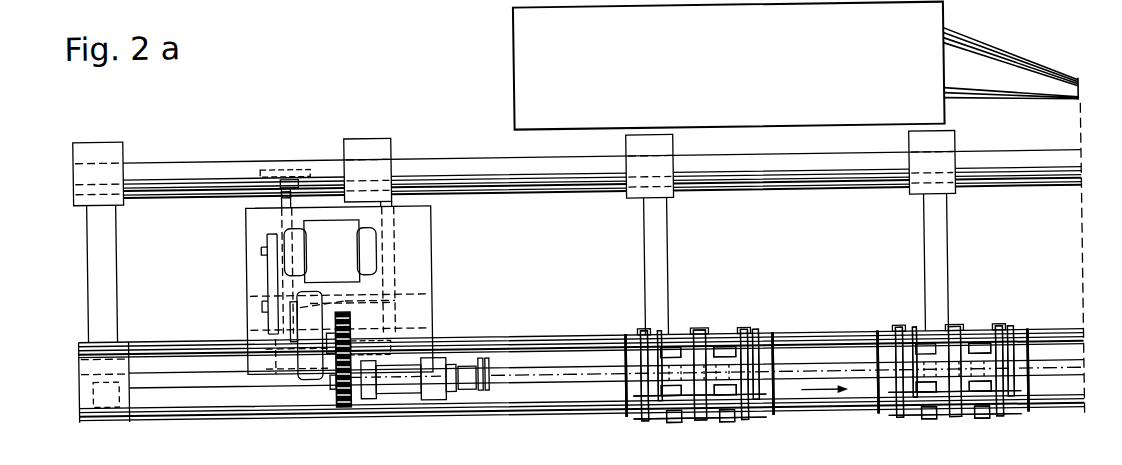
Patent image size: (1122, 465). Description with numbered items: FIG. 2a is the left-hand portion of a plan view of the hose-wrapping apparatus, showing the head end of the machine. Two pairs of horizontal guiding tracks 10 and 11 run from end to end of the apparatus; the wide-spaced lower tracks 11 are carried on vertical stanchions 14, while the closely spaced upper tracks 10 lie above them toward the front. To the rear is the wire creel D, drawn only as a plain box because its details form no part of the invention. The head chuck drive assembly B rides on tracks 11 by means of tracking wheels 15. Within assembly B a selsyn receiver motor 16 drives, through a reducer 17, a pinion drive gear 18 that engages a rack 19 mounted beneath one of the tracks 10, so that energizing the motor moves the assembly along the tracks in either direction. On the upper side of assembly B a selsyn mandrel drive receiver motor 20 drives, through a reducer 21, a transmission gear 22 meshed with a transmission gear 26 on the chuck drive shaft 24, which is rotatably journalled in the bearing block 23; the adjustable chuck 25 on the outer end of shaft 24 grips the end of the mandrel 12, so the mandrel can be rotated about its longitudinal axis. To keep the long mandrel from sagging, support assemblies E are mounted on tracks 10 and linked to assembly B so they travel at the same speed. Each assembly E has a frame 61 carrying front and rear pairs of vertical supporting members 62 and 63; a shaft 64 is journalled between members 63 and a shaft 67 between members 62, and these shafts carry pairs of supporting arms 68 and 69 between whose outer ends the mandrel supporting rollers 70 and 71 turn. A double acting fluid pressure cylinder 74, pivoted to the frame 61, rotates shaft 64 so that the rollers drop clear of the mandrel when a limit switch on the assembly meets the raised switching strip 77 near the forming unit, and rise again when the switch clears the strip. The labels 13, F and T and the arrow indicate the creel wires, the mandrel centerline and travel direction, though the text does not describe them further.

The upper guiding tracks 10 is at (522, 340).
The lower guiding tracks 11 is at (195, 191).
The mandrel 12 is at (490, 334).
The strand guide wedge 13 is at (1005, 102).
The vertical stanchions 14 is at (92, 392).
The tracking wheels 15 is at (283, 176).
The selsyn receiver motor 16 is at (388, 300).
The reducer 17 is at (250, 326).
The pinion drive gear 18 is at (303, 168).
The rack 19 is at (206, 168).
The selsyn mandrel drive receiver motor 20 is at (378, 248).
The reducer 21 is at (315, 374).
The transmission gear 22 is at (376, 342).
The bearing block 23 is at (410, 396).
The chuck drive shaft 24 is at (452, 392).
The adjustable chuck 25 is at (480, 392).
The transmission gear 26 is at (340, 405).
The frame 61 is at (876, 346).
The vertical supporting members 62 is at (662, 400).
The vertical supporting members 63 is at (645, 330).
The shaft 64 is at (699, 332).
The shaft 67 is at (710, 424).
The supporting arms 68 is at (659, 340).
The supporting arms 69 is at (774, 405).
The mandrel supporting roller 70 is at (630, 382).
The mandrel supporting roller 71 is at (776, 345).
The double acting fluid pressure cylinder 74 is at (722, 349).
The raised switching strip 77 is at (1080, 345).
The head chuck drive assembly B is at (456, 300).
The wire creel D is at (513, 30).
The support assemblies E is at (685, 295).
The axis line F is at (250, 382).
The shaft segment T is at (520, 378).